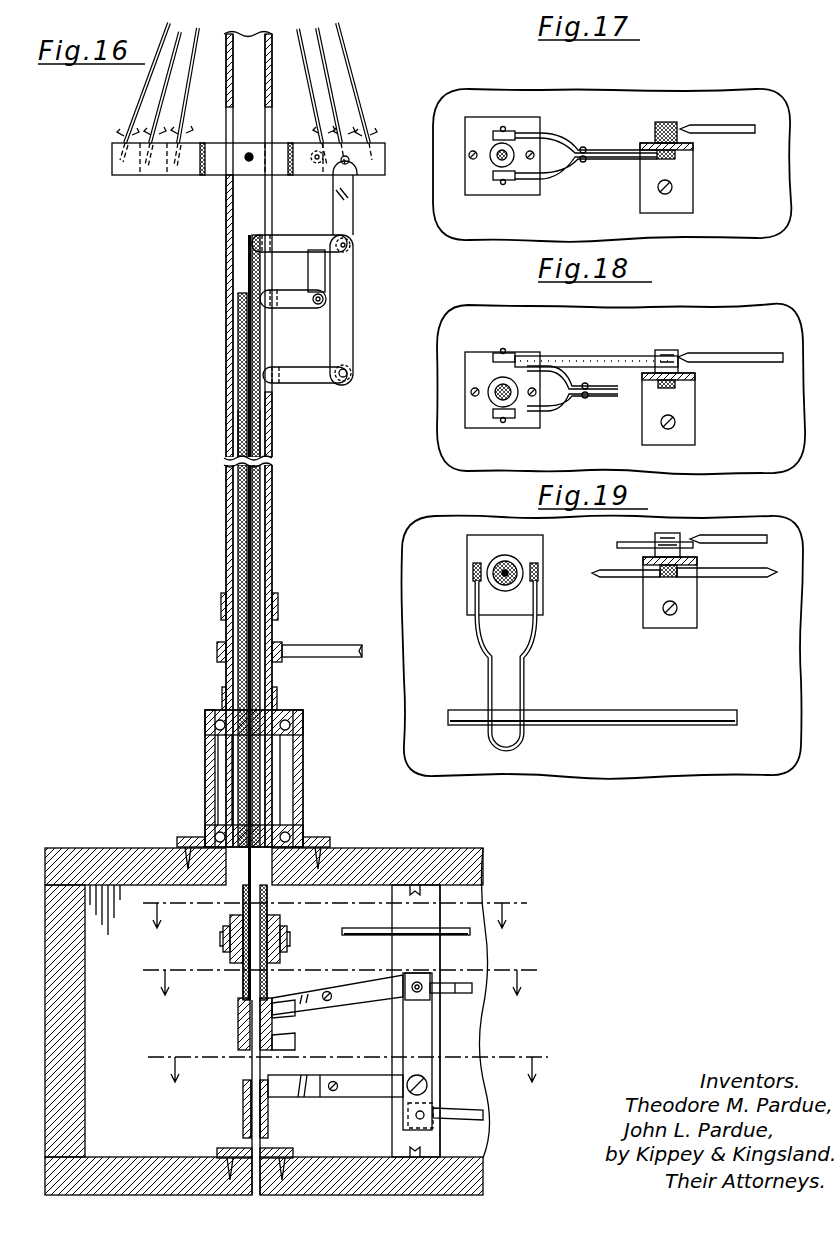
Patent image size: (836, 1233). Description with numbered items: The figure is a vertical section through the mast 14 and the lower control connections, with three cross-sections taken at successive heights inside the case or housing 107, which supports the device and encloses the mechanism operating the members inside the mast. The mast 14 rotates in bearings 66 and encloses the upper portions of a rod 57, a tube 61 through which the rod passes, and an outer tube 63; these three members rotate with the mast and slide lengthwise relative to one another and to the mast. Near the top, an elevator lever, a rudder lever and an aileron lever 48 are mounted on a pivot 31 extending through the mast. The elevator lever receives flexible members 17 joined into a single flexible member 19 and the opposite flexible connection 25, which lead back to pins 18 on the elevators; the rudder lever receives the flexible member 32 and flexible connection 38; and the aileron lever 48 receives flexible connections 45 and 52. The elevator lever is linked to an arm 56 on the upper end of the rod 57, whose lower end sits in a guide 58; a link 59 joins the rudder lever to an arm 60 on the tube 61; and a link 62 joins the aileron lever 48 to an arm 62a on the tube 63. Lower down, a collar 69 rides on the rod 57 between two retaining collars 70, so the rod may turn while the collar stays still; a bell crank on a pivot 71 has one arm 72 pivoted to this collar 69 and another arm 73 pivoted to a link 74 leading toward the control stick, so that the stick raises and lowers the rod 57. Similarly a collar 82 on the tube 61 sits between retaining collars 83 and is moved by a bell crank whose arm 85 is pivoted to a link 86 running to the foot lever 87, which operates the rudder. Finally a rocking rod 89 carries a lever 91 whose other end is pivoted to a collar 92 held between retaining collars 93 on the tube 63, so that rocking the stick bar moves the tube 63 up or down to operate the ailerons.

In FIG. 16, the mast 14 is at (228, 531).
In FIG. 16, the flexible members 17 is at (348, 1057).
In FIG. 16, the pins 18 is at (341, 970).
In FIG. 16, the flexible member 19 is at (168, 78).
In FIG. 16, the flexible connection 25 is at (333, 77).
In FIG. 16, the pivot 31 is at (246, 162).
In FIG. 16, the flexible member 32 is at (185, 99).
In FIG. 16, the flexible connection 38 is at (318, 95).
In FIG. 16, the flexible connection 45 is at (132, 122).
In FIG. 16, the lever 48 is at (190, 170).
In FIG. 16, the flexible connection 52 is at (335, 45).
In FIG. 16, the arm 56 is at (300, 238).
In FIG. 16, the rod 57 is at (252, 266).
In FIG. 17, the rod 57 is at (497, 160).
In FIG. 18, the rod 57 is at (500, 400).
In FIG. 19, the rod 57 is at (505, 588).
In FIG. 16, the guide 58 is at (270, 1150).
In FIG. 17, the guide 58 is at (490, 188).
In FIG. 18, the guide 58 is at (472, 413).
In FIG. 19, the guide 58 is at (540, 550).
In FIG. 16, the link 59 is at (320, 270).
In FIG. 16, the arm 60 is at (298, 306).
In FIG. 16, the tube 61 is at (259, 352).
In FIG. 18, the tube 61 is at (493, 387).
In FIG. 19, the tube 61 is at (493, 563).
In FIG. 16, the link 62 is at (350, 325).
In FIG. 16, the arm 62a is at (310, 380).
In FIG. 16, the tube 63 is at (240, 420).
In FIG. 16, the bearings 66 is at (300, 727).
In FIG. 16, the collar 69 is at (268, 1110).
In FIG. 16, the retaining collars 70 is at (245, 1085).
In FIG. 17, the retaining collars 70 is at (493, 148).
In FIG. 16, the pivot 71 is at (428, 1086).
In FIG. 17, the pivot 71 is at (672, 160).
In FIG. 16, the arm 72 is at (366, 1097).
In FIG. 17, the arm 72 is at (615, 158).
In FIG. 18, the arm 72 is at (598, 396).
In FIG. 19, the arm 72 is at (626, 579).
In FIG. 16, the arm 73 is at (420, 1032).
In FIG. 17, the arm 73 is at (680, 155).
In FIG. 18, the arm 73 is at (668, 409).
In FIG. 19, the arm 73 is at (680, 580).
In FIG. 16, the link 74 is at (470, 996).
In FIG. 19, the link 74 is at (757, 578).
In FIG. 16, the collar 82 is at (273, 1026).
In FIG. 16, the retaining collars 83 is at (280, 998).
In FIG. 18, the retaining collars 83 is at (510, 402).
In FIG. 17, the arm 85 is at (664, 124).
In FIG. 18, the arm 85 is at (660, 352).
In FIG. 19, the arm 85 is at (680, 543).
In FIG. 16, the link 86 is at (480, 1122).
In FIG. 17, the link 86 is at (720, 126).
In FIG. 18, the link 86 is at (722, 356).
In FIG. 19, the link 86 is at (742, 537).
In FIG. 16, the lever 87 is at (366, 996).
In FIG. 18, the lever 87 is at (592, 356).
In FIG. 19, the lever 87 is at (630, 543).
In FIG. 16, the rod 89 is at (366, 928).
In FIG. 19, the rod 89 is at (615, 716).
In FIG. 19, the lever 91 is at (524, 660).
In FIG. 16, the collar 92 is at (286, 940).
In FIG. 16, the retaining collars 93 is at (276, 918).
In FIG. 19, the retaining collars 93 is at (520, 568).
In FIG. 16, the case or housing 107 is at (125, 855).
In FIG. 17, the case or housing 107 is at (590, 100).
In FIG. 18, the case or housing 107 is at (690, 315).
In FIG. 19, the case or housing 107 is at (630, 762).